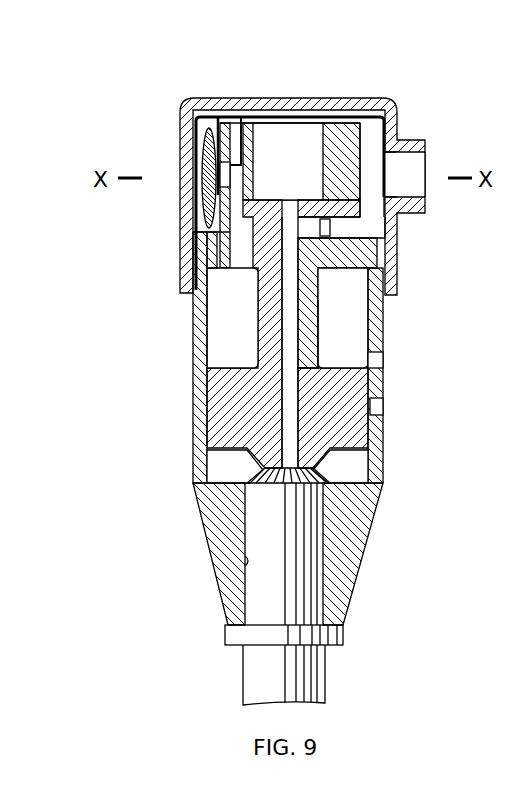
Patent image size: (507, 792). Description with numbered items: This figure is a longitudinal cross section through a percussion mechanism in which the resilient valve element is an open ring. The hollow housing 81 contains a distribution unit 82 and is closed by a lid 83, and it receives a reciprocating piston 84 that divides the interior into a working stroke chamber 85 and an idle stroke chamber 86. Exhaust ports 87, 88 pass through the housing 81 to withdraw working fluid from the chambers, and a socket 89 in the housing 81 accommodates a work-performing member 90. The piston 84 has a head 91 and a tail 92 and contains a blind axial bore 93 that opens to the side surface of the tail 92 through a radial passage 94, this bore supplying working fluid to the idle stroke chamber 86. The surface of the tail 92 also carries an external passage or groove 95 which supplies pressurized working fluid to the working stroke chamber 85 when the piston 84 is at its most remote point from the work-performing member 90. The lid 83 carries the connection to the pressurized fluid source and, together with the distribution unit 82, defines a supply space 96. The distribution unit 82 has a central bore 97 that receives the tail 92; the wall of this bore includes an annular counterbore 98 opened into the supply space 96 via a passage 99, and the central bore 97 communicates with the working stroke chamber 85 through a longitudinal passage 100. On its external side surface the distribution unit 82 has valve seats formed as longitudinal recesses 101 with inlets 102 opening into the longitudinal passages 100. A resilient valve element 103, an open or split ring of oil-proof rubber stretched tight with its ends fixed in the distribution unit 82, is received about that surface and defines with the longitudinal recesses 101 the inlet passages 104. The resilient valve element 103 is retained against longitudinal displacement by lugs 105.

The hollow housing 81 is at (210, 528).
The distribution unit 82 is at (230, 268).
The lid 83 is at (205, 230).
The reciprocating piston 84 is at (215, 390).
The working stroke chamber 85 is at (207, 328).
The idle stroke chamber 86 is at (212, 460).
The exhaust port 87 is at (380, 360).
The exhaust port 88 is at (384, 410).
The socket 89 is at (246, 562).
The work-performing member 90 is at (255, 604).
The head 91 is at (362, 425).
The tail 92 is at (312, 308).
The blind axial bore 93 is at (286, 345).
The radial passage 94 is at (320, 268).
The external passage (groove) 95 is at (316, 338).
The supply space 96 is at (365, 125).
The central bore 97 is at (300, 128).
The annular counterbore 98 is at (322, 220).
The passage 99 is at (356, 226).
The longitudinal passage 100 is at (237, 126).
The longitudinal recess 101 is at (184, 114).
The inlet 102 is at (232, 172).
The resilient valve element 103 is at (202, 182).
The inlet passage 104 is at (192, 240).
The lug 105 is at (205, 142).